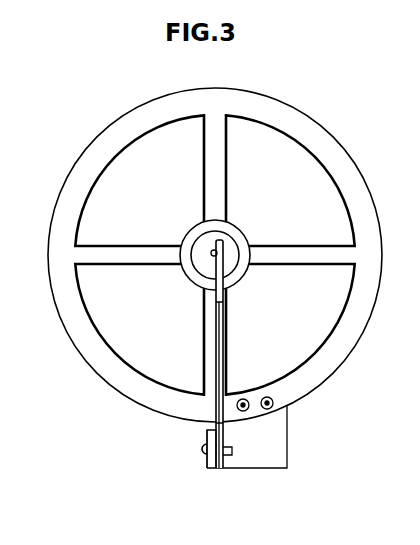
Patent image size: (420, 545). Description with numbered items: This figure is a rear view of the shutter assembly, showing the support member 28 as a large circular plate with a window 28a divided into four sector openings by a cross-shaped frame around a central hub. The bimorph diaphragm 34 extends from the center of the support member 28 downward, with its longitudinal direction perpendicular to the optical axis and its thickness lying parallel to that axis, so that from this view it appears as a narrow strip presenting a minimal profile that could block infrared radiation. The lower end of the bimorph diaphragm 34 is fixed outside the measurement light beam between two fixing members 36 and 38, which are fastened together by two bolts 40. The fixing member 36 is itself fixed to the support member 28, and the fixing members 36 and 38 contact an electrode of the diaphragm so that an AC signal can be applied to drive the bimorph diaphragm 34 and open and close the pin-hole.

The support member 28 is at (303, 127).
The window 28a is at (175, 203).
The bimorph diaphragm 34 is at (215, 348).
The fixing member 36 is at (277, 432).
The fixing member 38 is at (208, 462).
The bolts 40 is at (203, 447).